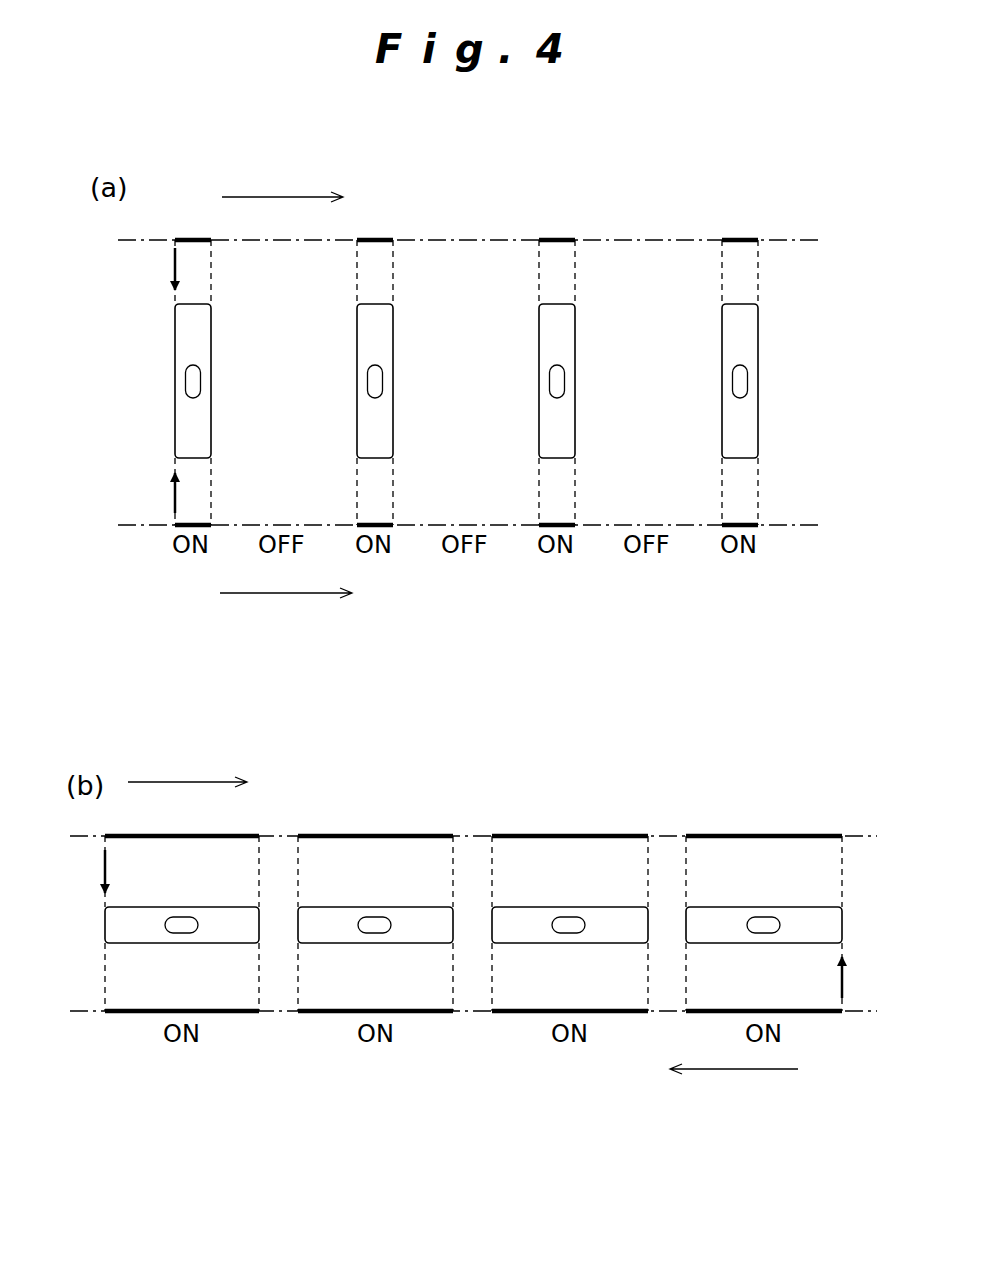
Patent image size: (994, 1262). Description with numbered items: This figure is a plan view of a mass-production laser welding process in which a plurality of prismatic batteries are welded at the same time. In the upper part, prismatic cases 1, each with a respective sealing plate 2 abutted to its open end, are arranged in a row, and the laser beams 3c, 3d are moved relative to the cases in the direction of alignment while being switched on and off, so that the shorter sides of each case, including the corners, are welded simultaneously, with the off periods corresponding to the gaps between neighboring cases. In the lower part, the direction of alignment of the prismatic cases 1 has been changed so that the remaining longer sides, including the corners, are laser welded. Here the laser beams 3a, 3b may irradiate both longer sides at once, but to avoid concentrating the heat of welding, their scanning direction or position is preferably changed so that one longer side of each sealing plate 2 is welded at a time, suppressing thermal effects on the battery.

The prismatic case 1 is at (185, 412).
The sealing plate 2 is at (188, 333).
The laser beam 3a is at (102, 880).
The laser beam 3b is at (845, 975).
The laser beam 3c is at (172, 278).
The laser beam 3d is at (172, 492).